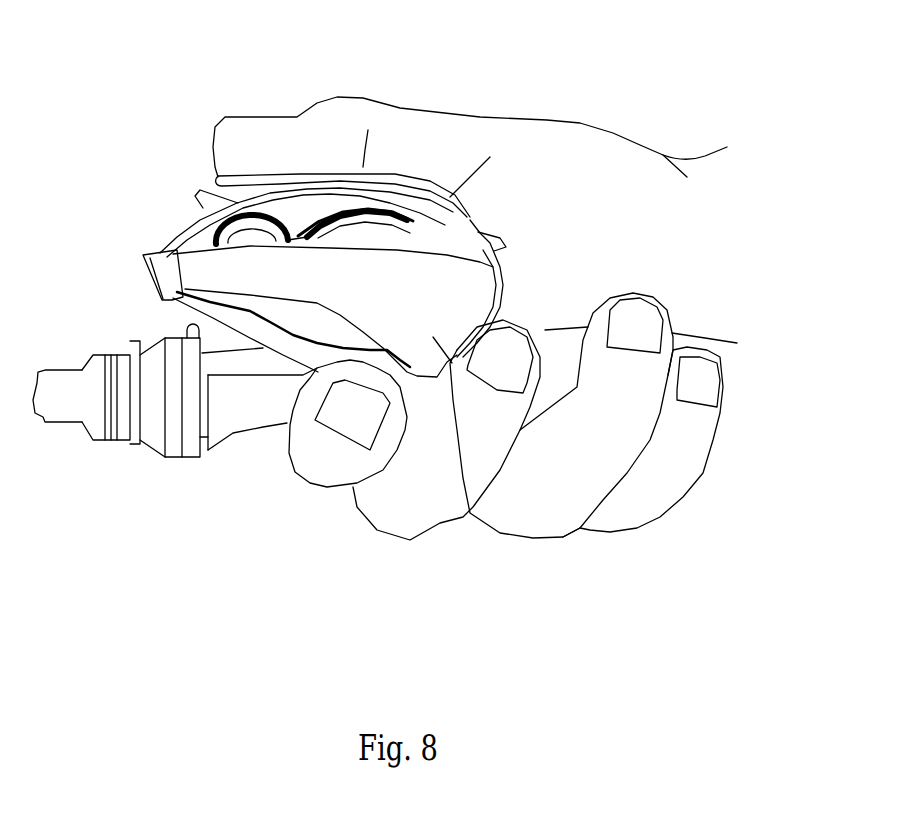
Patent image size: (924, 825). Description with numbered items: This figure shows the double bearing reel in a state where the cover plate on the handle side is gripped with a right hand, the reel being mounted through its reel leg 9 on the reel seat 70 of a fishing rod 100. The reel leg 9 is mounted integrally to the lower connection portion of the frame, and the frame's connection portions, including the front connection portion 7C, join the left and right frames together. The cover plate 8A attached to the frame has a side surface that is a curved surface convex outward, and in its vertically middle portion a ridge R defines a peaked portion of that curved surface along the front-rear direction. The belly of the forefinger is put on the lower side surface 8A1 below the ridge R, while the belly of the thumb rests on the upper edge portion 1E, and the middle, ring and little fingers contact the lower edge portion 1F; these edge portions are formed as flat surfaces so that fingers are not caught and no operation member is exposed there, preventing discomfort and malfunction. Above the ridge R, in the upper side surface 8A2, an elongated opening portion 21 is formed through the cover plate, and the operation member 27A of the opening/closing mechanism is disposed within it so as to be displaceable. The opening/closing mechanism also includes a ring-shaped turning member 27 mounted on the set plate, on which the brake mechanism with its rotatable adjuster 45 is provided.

The adjuster 45 is at (232, 217).
The turning member 27 is at (318, 213).
The operation member 27A is at (355, 205).
The upper edge portion 1E is at (384, 205).
The opening portion 21 is at (398, 178).
The upper side surface 8A2 is at (463, 228).
The ridge R is at (500, 247).
The lower side surface 8A1 is at (478, 287).
The front connection portion 7C is at (147, 280).
The fishing rod 100 is at (62, 412).
The reel seat 70 is at (233, 427).
The reel leg 9 is at (273, 363).
The lower edge portion 1F is at (462, 335).
The left cover plate 8A is at (457, 330).